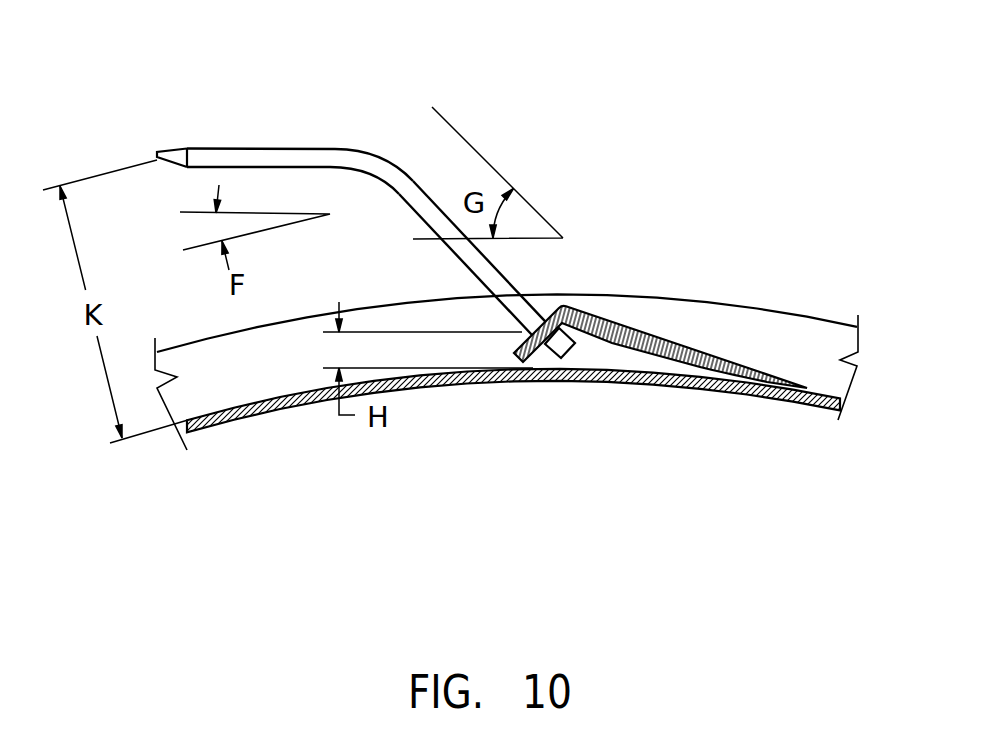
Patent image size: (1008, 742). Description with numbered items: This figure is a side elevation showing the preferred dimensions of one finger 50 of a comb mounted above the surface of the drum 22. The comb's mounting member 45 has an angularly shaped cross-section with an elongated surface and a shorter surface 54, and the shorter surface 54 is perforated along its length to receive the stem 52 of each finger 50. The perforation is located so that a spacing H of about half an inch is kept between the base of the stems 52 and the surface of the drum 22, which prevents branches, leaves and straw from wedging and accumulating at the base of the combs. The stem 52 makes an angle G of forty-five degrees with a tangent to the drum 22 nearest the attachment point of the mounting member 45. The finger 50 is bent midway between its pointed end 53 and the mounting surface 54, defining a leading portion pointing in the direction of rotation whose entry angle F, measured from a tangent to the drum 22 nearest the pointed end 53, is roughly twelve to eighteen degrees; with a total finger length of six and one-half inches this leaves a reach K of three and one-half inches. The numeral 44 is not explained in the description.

The drum 22 is at (678, 385).
The skin sheet 44 is at (787, 320).
The mounting member 45 is at (700, 347).
The finger 50 is at (376, 178).
The stem 52 is at (515, 275).
The pointed end 53 is at (173, 148).
The shorter surface 54 is at (546, 352).